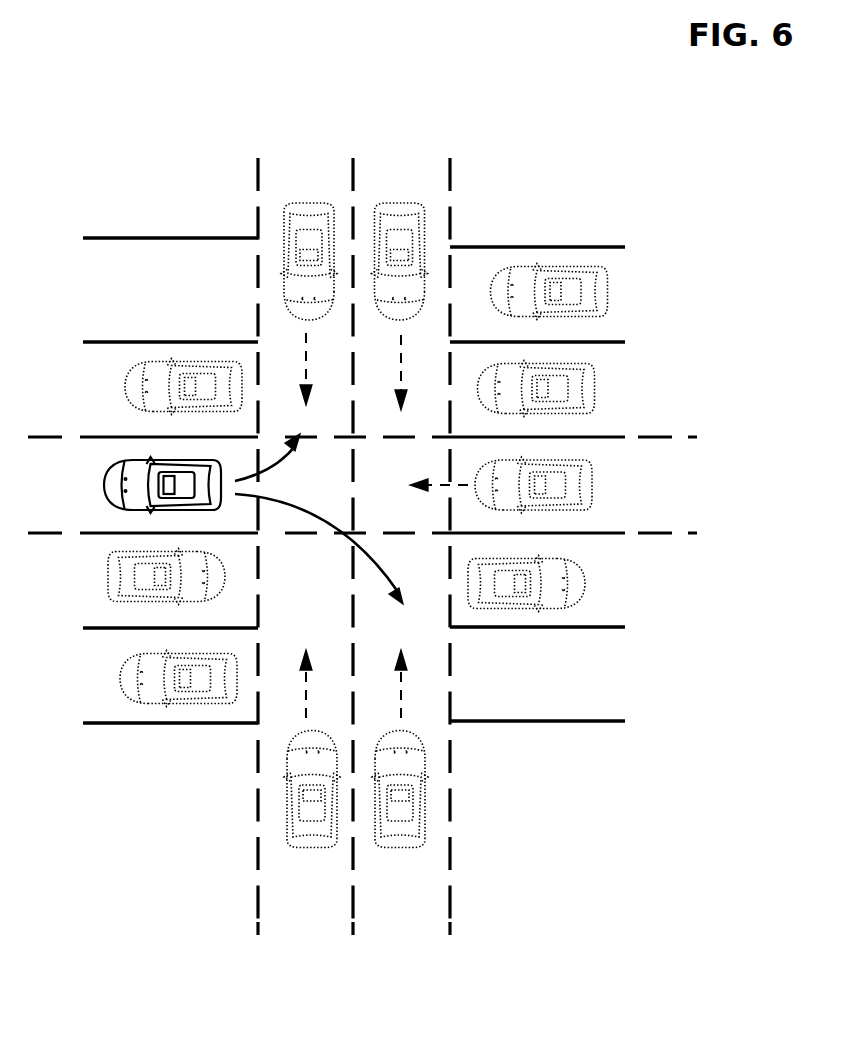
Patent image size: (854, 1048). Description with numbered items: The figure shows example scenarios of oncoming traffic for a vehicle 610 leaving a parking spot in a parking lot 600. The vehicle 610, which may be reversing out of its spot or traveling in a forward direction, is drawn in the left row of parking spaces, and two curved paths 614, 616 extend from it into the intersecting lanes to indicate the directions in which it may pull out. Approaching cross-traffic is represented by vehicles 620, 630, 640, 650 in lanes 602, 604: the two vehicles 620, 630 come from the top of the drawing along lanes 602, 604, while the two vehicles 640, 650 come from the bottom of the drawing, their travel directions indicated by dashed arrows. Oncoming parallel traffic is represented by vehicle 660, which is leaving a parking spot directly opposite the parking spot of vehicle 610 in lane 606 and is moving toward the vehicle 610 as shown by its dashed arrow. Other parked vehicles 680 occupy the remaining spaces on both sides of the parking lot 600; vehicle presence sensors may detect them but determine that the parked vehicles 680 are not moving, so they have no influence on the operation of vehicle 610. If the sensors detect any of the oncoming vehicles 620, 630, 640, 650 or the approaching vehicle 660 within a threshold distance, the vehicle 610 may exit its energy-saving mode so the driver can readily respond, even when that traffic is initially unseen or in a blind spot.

The parking lot 600 is at (600, 128).
The lane 602 is at (305, 902).
The lane 604 is at (400, 902).
The lane 606 is at (671, 484).
The vehicle 610 is at (105, 484).
The left turn path 614 is at (278, 468).
The right turn path 616 is at (330, 513).
The vehicle 620 is at (318, 203).
The vehicle 630 is at (395, 203).
The vehicle 640 is at (290, 802).
The vehicle 650 is at (423, 812).
The vehicle 660 is at (596, 490).
The parked vehicles 680 is at (125, 388).